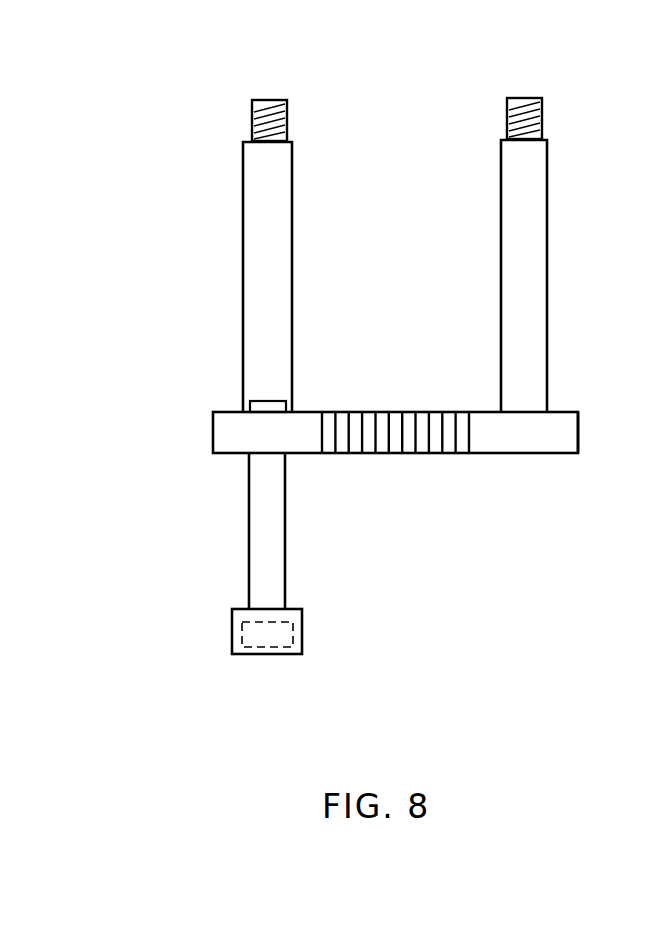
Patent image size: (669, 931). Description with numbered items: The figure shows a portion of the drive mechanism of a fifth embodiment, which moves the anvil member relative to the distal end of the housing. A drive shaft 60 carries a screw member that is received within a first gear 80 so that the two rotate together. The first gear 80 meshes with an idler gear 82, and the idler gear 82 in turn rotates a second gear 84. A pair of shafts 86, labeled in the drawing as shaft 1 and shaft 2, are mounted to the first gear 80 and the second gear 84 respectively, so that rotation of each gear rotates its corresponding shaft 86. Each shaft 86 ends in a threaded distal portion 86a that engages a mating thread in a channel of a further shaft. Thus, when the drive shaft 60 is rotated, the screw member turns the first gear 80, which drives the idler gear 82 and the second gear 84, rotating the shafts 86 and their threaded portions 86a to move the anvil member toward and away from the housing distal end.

The drive shaft 60 is at (262, 545).
The first gear 80 is at (241, 441).
The idler gear 82 is at (447, 440).
The second gear 84 is at (549, 441).
The shafts 86 is at (395, 276).
The threaded distal portion 86a is at (287, 113).
The rod 1 is at (275, 288).
The rod 2 is at (531, 286).